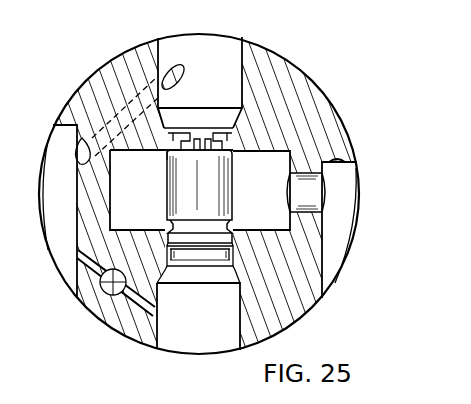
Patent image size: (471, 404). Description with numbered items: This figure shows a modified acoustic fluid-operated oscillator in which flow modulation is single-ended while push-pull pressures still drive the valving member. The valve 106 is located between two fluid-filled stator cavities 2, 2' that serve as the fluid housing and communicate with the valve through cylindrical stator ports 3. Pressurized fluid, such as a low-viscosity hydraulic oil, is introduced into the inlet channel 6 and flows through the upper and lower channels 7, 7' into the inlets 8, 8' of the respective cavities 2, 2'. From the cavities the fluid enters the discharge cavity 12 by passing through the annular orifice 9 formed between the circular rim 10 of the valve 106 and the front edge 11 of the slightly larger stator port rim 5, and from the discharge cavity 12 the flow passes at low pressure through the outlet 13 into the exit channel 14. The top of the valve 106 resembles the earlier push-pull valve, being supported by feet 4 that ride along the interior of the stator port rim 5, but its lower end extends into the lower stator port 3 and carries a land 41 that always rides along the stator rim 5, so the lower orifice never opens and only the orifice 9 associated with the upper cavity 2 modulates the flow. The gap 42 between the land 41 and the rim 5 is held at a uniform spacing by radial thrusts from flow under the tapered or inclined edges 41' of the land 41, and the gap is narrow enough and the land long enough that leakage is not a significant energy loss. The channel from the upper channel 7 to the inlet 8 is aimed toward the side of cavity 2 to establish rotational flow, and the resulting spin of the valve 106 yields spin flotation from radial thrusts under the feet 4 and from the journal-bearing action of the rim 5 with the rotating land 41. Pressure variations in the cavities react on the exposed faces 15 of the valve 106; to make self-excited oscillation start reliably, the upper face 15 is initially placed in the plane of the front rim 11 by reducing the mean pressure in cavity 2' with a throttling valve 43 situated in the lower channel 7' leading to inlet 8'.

The stator cavity 2 is at (200, 82).
The stator cavity 2' is at (198, 316).
The stator port 3 is at (207, 262).
The feet 4 is at (180, 132).
The stator port rim 5 is at (222, 133).
The inlet channel 6 is at (60, 211).
The upper channel 7 is at (75, 151).
The lower channel 7' is at (109, 273).
The inlet 8 is at (173, 77).
The inlet 8' is at (124, 293).
The annular orifice 9 is at (166, 151).
The circular rim 10 is at (168, 160).
The front edge 11 is at (237, 151).
The discharge cavity 12 is at (261, 190).
The outlet 13 is at (306, 192).
The exit channel 14 is at (339, 228).
The exposed face 15 is at (209, 147).
The land 41 is at (200, 272).
The tapered edges 41' is at (214, 226).
The gap 42 is at (228, 260).
The throttling valve 43 is at (112, 283).
The valve 106 is at (186, 202).